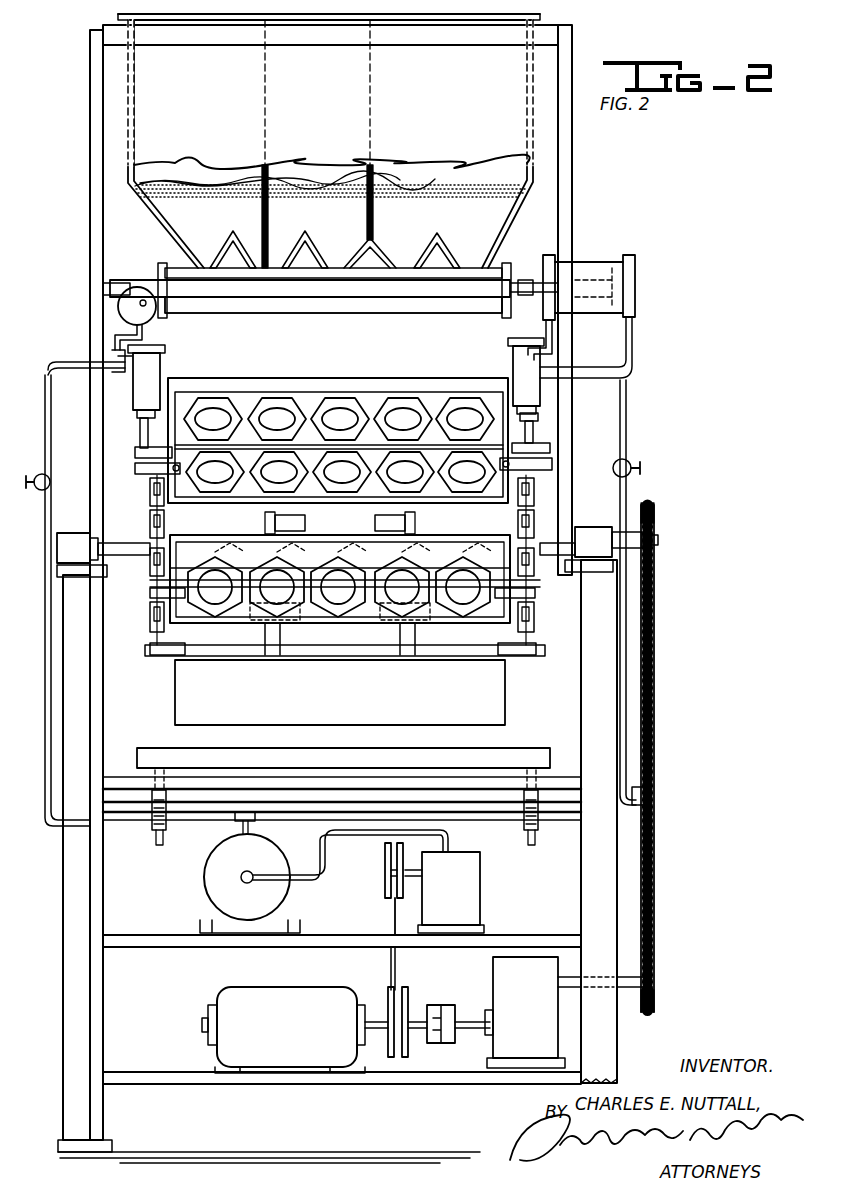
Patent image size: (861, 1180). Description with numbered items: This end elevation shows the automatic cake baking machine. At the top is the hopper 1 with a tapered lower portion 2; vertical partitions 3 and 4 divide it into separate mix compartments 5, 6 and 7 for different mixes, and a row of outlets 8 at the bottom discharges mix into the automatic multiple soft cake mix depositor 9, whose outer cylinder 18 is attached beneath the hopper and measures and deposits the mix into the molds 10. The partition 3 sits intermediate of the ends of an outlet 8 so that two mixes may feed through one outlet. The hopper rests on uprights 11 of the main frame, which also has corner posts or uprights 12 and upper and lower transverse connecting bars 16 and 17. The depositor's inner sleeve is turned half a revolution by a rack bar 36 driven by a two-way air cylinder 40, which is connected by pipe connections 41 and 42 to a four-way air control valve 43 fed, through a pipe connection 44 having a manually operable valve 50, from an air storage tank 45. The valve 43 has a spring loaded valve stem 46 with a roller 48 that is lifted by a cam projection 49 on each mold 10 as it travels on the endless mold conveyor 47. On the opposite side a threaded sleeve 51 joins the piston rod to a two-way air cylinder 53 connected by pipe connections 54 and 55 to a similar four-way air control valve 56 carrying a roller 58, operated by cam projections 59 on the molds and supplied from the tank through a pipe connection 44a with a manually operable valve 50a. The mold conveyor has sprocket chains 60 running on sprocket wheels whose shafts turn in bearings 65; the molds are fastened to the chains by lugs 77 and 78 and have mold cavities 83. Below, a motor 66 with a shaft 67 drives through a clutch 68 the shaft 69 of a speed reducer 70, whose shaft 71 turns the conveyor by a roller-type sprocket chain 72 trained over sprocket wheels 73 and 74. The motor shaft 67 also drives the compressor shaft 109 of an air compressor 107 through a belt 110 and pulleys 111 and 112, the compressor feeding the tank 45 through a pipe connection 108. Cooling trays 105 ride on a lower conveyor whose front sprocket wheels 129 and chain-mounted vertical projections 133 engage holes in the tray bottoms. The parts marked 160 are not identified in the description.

The hopper 1 is at (503, 73).
The tapered lower portion 2 is at (162, 237).
The vertical partition 3 is at (269, 212).
The vertical partition 4 is at (375, 212).
The mix compartment 5 is at (204, 245).
The mix compartment 6 is at (343, 246).
The mix compartment 7 is at (469, 244).
The outlets 8 is at (210, 275).
The automatic multiple soft cake mix depositor 9 is at (312, 317).
The molds 10 is at (423, 379).
The uprights 11 is at (93, 112).
The corner posts or uprights 12 is at (75, 867).
The upper transverse connecting bar 16 is at (140, 770).
The lower transverse connecting bar 17 is at (157, 950).
The outer cylinder 18 is at (418, 306).
The rack bar 36 is at (120, 306).
The two-way air cylinder 40 is at (125, 290).
The pipe connection 41 is at (120, 352).
The pipe connection 42 is at (113, 338).
The four-way air control valve 43 is at (160, 368).
The pipe connection 44 is at (48, 503).
The pipe connection 44a is at (627, 655).
The air storage tank 45 is at (215, 862).
The spring loaded valve stem 46 is at (138, 428).
The endless mold conveyor 47 is at (340, 382).
The roller 48 is at (140, 442).
The cam projection 49 is at (135, 452).
The manually operable valve 50 is at (50, 484).
The manually operable valve 50a is at (630, 462).
The threaded sleeve 51 is at (540, 300).
The two-way air cylinder 53 is at (600, 270).
The pipe connection 54 is at (565, 330).
The pipe connection 55 is at (636, 335).
The four-way air control valve 56 is at (518, 360).
The roller 58 is at (540, 436).
The cam projections 59 is at (552, 440).
The sprocket chains 60 is at (200, 582).
The bearings 65 is at (80, 565).
The motor 66 is at (283, 1030).
The motor shaft 67 is at (388, 1010).
The clutch 68 is at (440, 1005).
The speed reducer shaft 69 is at (493, 1012).
The speed reducer 70 is at (530, 1020).
The speed reducer output shaft 71 is at (640, 980).
The sprocket chain 72 is at (655, 698).
The sprocket wheel 73 is at (658, 514).
The sprocket wheel 74 is at (655, 1000).
The lug 77 is at (148, 502).
The lug 78 is at (540, 490).
The mold cavities 83 is at (278, 418).
The cooling trays 105 is at (345, 752).
The air compressor 107 is at (480, 892).
The pipe connection 108 is at (298, 885).
The compressor shaft 109 is at (418, 880).
The belt 110 is at (393, 918).
The pulley 111 is at (395, 1070).
The pulley 112 is at (385, 872).
The front sprocket wheels 129 is at (160, 832).
The vertical projections 133 is at (168, 840).
The core blocks 160 is at (310, 522).